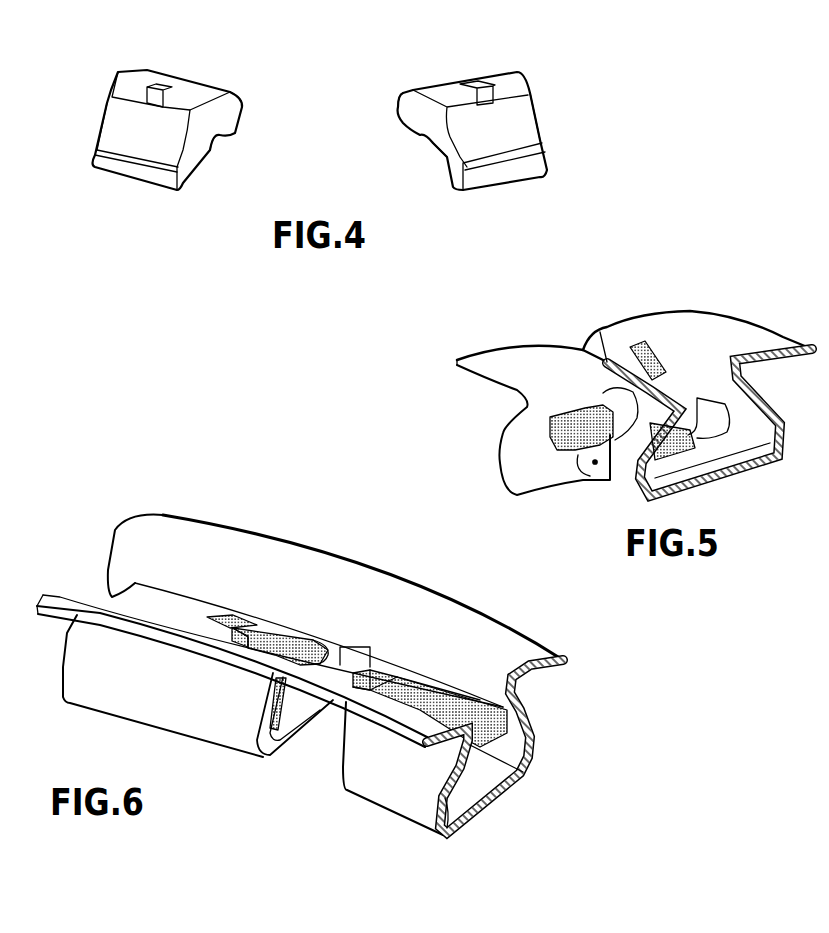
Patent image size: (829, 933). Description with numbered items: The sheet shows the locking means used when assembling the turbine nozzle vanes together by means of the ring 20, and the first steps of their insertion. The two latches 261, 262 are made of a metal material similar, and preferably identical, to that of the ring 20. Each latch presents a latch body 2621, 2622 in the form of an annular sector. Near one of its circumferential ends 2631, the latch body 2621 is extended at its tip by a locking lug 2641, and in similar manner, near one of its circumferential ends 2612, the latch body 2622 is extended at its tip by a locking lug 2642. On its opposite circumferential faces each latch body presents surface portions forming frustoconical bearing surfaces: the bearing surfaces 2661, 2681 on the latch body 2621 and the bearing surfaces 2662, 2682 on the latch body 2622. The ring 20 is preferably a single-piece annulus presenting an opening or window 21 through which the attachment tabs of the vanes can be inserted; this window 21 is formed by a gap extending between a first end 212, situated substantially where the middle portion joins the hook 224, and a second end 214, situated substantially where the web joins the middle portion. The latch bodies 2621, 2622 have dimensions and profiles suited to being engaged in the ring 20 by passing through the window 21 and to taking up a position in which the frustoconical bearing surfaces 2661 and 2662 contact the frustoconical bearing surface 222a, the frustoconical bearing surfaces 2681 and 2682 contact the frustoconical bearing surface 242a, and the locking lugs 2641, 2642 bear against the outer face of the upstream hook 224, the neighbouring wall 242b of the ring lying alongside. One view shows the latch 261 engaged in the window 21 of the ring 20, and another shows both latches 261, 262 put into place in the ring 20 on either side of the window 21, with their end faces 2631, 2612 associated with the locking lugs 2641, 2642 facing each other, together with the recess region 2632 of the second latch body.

In FIG. 5, the ring 20 is at (712, 330).
In FIG. 5, the window 21 is at (597, 466).
In FIG. 5, the first end 212 is at (603, 397).
In FIG. 5, the second end 214 is at (707, 403).
In FIG. 6, the upstream hook 224 is at (92, 600).
In FIG. 6, the frustoconical bearing surface 222a is at (453, 792).
In FIG. 6, the frustoconical bearing surface 242a is at (500, 747).
In FIG. 6, the outer wall 242b is at (523, 703).
In FIG. 4, the latch 261 is at (217, 72).
In FIG. 5, the latch 261 is at (557, 425).
In FIG. 6, the latch 261 is at (223, 617).
In FIG. 4, the latch 262 is at (427, 76).
In FIG. 6, the latch 262 is at (430, 680).
In FIG. 4, the circumferential end 2612 is at (440, 140).
In FIG. 6, the circumferential end 2612 is at (353, 657).
In FIG. 4, the latch body 2621 is at (117, 172).
In FIG. 6, the latch body 2621 is at (160, 685).
In FIG. 4, the latch body 2622 is at (520, 170).
In FIG. 4, the circumferential end 2631 is at (202, 138).
In FIG. 6, the circumferential end 2631 is at (313, 637).
In FIG. 6, the second contact element recess 2632 is at (330, 748).
In FIG. 4, the locking lug 2641 is at (172, 85).
In FIG. 6, the locking lug 2641 is at (257, 615).
In FIG. 4, the locking lug 2642 is at (457, 85).
In FIG. 6, the locking lug 2642 is at (363, 673).
In FIG. 4, the frustoconical bearing surface 2661 is at (118, 135).
In FIG. 4, the frustoconical bearing surface 2662 is at (520, 133).
In FIG. 4, the frustoconical bearing surface 2681 is at (237, 93).
In FIG. 4, the frustoconical bearing surface 2682 is at (420, 92).